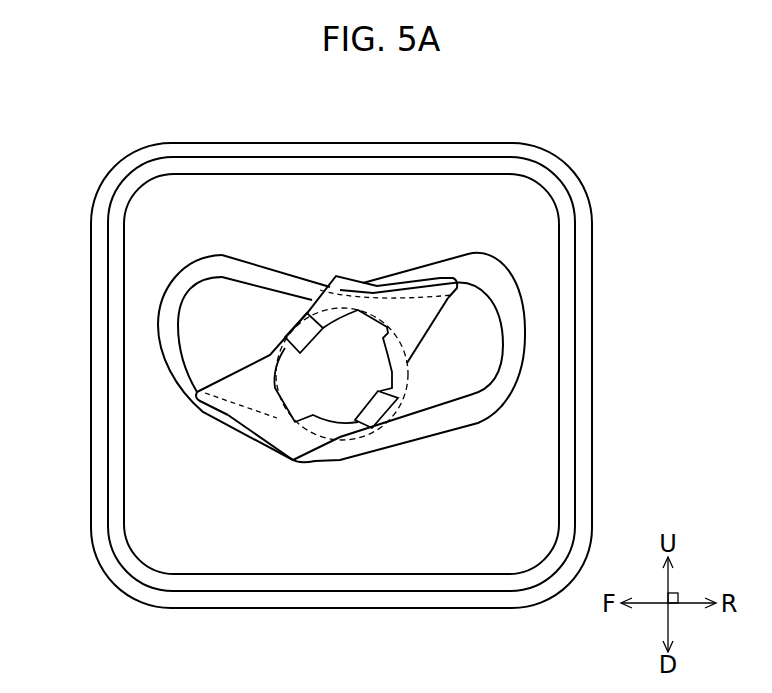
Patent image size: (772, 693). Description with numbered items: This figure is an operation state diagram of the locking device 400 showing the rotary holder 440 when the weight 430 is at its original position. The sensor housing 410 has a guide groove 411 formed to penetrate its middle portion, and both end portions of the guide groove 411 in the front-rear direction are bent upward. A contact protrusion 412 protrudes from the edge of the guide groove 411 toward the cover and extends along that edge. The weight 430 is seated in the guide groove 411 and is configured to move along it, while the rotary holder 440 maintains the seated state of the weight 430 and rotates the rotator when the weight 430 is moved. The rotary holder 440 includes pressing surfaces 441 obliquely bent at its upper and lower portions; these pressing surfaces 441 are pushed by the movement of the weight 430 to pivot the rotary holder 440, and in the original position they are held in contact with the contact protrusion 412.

The locking device 400 is at (612, 157).
The sensor housing 410 is at (341, 196).
The guide groove 411 is at (293, 307).
The contact protrusion 412 is at (167, 333).
The weight 430 is at (343, 437).
The rotary holder 440 is at (257, 395).
The pressing surfaces 441 is at (427, 290).